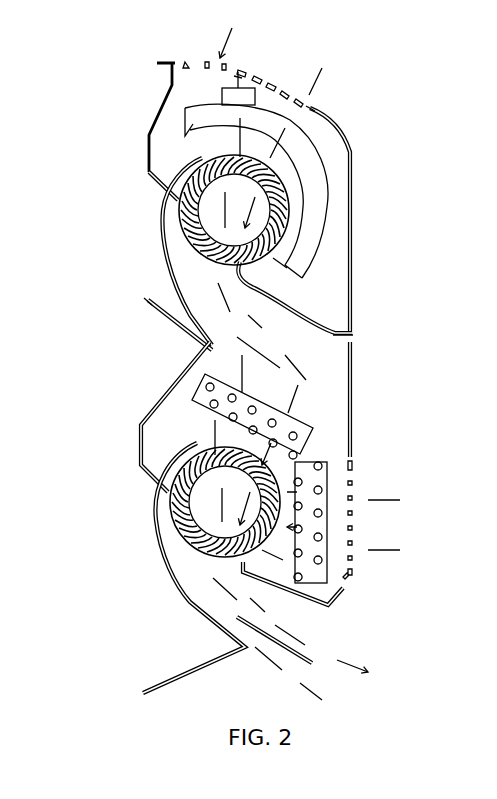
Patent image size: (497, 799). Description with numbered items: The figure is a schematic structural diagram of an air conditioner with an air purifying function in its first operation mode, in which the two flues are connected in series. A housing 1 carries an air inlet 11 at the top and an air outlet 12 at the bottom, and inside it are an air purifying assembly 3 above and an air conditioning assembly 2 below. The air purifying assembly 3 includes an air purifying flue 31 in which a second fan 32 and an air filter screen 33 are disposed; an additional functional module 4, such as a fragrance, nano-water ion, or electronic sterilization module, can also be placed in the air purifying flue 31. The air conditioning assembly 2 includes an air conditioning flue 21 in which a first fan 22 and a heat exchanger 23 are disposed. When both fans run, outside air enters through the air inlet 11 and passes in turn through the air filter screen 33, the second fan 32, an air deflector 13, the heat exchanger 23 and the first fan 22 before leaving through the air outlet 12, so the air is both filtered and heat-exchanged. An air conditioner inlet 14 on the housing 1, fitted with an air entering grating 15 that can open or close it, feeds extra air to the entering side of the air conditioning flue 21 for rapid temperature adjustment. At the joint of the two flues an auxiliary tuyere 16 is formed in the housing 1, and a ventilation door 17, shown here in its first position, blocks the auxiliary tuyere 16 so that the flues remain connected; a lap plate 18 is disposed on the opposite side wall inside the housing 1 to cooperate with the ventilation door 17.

The housing 1 is at (353, 190).
The air inlet 11 is at (270, 82).
The air outlet 12 is at (300, 630).
The air deflector 13 is at (248, 342).
The air conditioner inlet 14 is at (353, 578).
The air entering grating 15 is at (353, 520).
The auxiliary tuyere 16 is at (338, 425).
The ventilation door 17 is at (353, 393).
The lap plate 18 is at (166, 322).
The air conditioning assembly 2 is at (88, 548).
The air conditioning flue 21 is at (178, 570).
The first fan 22 is at (180, 497).
The heat exchanger 23 is at (148, 424).
The air purifying assembly 3 is at (105, 242).
The air purifying flue 31 is at (175, 248).
The second fan 32 is at (182, 208).
The air filter screen 33 is at (196, 123).
The additional functional module 4 is at (240, 78).